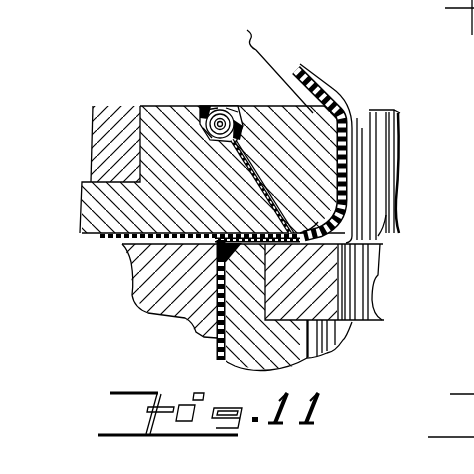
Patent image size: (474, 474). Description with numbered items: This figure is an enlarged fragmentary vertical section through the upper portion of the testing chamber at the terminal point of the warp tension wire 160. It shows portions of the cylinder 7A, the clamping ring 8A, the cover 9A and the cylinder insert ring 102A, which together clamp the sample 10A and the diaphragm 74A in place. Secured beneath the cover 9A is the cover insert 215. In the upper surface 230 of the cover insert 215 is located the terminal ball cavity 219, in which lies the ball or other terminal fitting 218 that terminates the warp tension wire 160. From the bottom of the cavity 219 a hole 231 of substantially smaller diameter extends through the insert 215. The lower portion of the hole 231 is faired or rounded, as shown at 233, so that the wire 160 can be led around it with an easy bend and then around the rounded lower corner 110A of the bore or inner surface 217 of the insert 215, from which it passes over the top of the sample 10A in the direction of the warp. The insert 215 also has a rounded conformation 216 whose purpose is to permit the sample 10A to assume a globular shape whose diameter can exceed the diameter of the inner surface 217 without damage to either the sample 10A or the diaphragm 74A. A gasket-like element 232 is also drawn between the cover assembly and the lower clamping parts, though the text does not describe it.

The warp tension wire 160 is at (270, 55).
The upper surface 230 is at (152, 105).
The terminal ball cavity 219 is at (217, 88).
The terminal fitting 218 is at (232, 106).
The rounded conformation 216 is at (332, 90).
The cover 9A is at (104, 131).
The inner surface 217 is at (349, 181).
The rounded lower corner 110A is at (352, 200).
The cover insert 215 is at (97, 209).
The hole 231 is at (258, 197).
The faired lower portion of hole 233 is at (318, 211).
The gasket 232 is at (103, 237).
The sample 10A is at (113, 250).
The cylinder insert ring 102A is at (364, 282).
The clamping ring 8A is at (157, 314).
The diaphragm 74A is at (200, 334).
The cylinder 7A is at (294, 360).